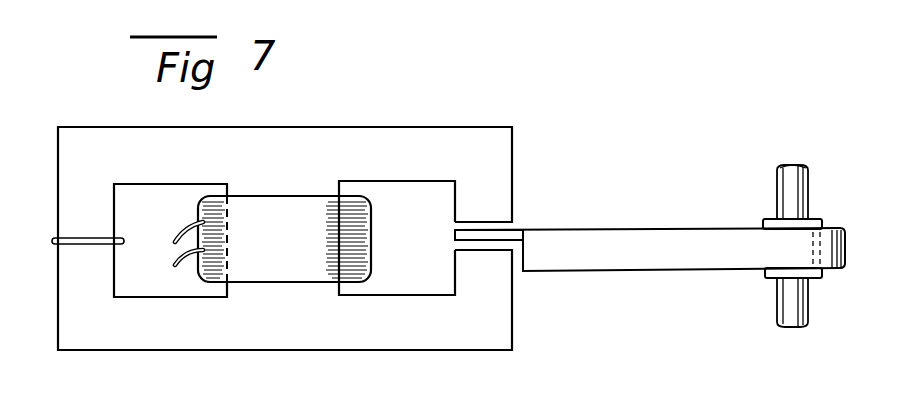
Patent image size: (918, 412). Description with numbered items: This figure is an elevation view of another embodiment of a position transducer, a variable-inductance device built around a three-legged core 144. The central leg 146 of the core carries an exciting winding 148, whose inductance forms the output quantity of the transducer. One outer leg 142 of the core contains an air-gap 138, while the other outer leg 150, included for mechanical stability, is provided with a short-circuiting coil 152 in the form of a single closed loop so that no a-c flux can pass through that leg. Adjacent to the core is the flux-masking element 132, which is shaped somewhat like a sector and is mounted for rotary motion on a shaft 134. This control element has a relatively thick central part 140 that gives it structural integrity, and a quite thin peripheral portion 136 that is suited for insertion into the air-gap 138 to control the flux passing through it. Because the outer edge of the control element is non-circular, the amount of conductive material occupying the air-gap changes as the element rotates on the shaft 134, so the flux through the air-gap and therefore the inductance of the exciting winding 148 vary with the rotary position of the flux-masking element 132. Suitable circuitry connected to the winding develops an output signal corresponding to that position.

The flux-masking element 132 is at (667, 219).
The shaft 134 is at (790, 303).
The peripheral portion 136 is at (472, 236).
The air-gap 138 is at (450, 245).
The central part 140 is at (627, 253).
The outer leg 142 is at (488, 203).
The three-legged core 144 is at (132, 117).
The central leg 146 is at (245, 190).
The exciting winding 148 is at (270, 258).
The other outer leg 150 is at (73, 203).
The short-circuiting coil 152 is at (90, 244).